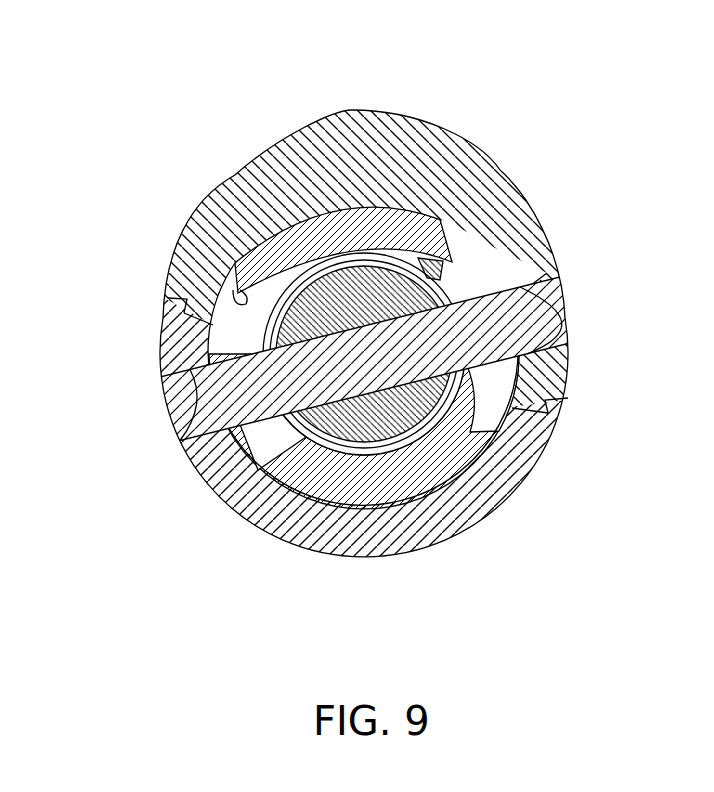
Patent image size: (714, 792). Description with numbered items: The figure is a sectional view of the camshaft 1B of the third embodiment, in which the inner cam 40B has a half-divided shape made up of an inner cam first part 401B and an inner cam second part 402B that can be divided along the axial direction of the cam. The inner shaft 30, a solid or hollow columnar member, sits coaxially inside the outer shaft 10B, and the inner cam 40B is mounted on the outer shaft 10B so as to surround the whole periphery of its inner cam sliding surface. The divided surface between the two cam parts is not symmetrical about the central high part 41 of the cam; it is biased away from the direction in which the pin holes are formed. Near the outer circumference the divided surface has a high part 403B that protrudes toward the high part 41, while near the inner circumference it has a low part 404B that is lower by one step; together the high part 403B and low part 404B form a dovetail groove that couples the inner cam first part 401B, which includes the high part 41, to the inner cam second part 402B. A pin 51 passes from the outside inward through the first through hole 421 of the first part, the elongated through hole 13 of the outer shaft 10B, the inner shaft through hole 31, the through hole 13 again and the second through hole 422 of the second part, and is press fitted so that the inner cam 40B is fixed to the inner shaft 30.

The camshaft 1B is at (606, 117).
The outer shaft 10B is at (440, 220).
The through hole 13 is at (232, 290).
The inner shaft 30 is at (430, 436).
The inner shaft through hole 31 is at (355, 393).
The inner cam 40B is at (540, 242).
The high part 41 is at (358, 108).
The pin 51 is at (290, 382).
The inner cam first part 401B is at (200, 255).
The inner cam second part 402B is at (356, 554).
The high part 403B is at (180, 291).
The low part 404B is at (192, 263).
The first through hole 421 is at (530, 292).
The second through hole 422 is at (180, 423).